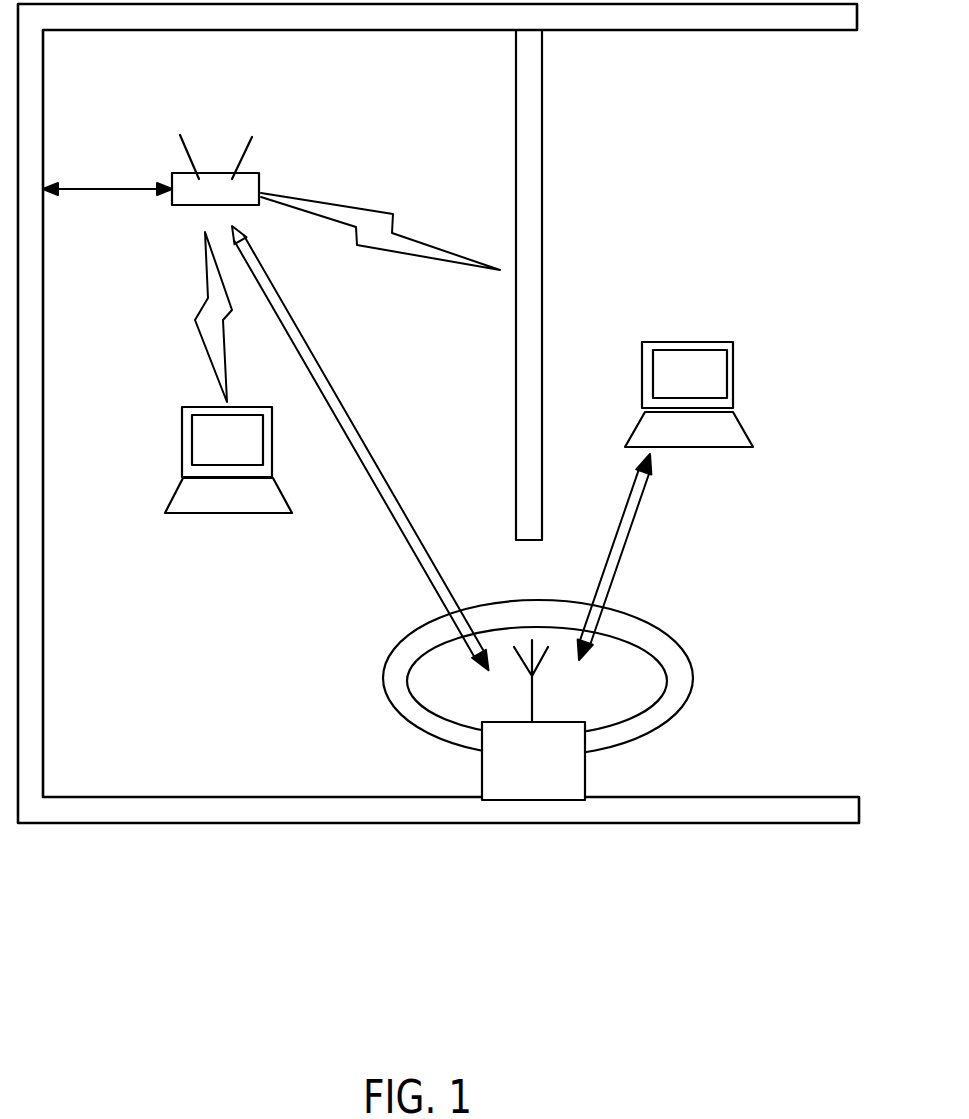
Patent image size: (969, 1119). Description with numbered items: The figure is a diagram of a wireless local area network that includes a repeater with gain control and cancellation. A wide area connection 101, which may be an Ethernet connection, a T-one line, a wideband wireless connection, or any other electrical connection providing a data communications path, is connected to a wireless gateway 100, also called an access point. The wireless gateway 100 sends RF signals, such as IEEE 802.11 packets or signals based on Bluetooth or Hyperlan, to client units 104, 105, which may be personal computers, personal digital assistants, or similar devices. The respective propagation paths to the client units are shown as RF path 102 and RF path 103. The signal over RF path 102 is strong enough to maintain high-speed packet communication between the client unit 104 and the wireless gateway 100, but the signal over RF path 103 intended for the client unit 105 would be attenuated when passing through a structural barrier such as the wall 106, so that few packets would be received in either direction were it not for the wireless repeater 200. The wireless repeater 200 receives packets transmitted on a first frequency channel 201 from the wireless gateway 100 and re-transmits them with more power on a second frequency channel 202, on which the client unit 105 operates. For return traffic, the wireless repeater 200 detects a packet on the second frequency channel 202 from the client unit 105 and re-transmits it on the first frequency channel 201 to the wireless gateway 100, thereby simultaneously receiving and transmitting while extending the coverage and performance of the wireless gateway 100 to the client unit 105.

The wireless gateway 100 is at (261, 183).
The wide area connection 101 is at (98, 187).
The RF path 102 is at (206, 291).
The RF path 103 is at (373, 212).
The client unit 104 is at (182, 448).
The client unit 105 is at (737, 352).
The wall 106 is at (543, 230).
The wireless repeater 200 is at (587, 777).
The first frequency channel 201 is at (365, 440).
The second frequency channel 202 is at (642, 530).